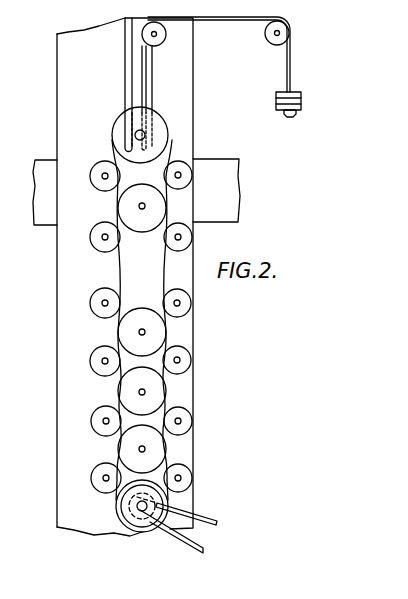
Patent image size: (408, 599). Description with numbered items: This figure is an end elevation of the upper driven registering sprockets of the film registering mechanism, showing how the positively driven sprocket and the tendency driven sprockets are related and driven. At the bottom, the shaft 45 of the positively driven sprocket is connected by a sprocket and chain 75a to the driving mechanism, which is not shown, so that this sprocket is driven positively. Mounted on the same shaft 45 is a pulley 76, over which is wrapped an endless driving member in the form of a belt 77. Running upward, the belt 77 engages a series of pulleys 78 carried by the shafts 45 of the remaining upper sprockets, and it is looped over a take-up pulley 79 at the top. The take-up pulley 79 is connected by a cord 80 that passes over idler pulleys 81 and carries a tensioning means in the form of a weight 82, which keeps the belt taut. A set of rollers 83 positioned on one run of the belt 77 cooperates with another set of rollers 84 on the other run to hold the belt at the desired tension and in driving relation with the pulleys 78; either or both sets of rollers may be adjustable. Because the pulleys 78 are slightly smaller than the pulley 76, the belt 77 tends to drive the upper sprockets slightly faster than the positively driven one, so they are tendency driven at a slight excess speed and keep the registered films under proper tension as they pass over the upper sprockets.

The shaft 45 is at (143, 330).
The chain 75a is at (218, 522).
The pulley 76 is at (163, 513).
The belt 77 is at (120, 263).
The pulleys 78 is at (142, 328).
The take-up pulley 79 is at (118, 130).
The cord 80 is at (240, 21).
The idler pulleys 81 is at (158, 46).
The weight 82 is at (283, 91).
The rollers 83 is at (181, 348).
The rollers 84 is at (108, 189).